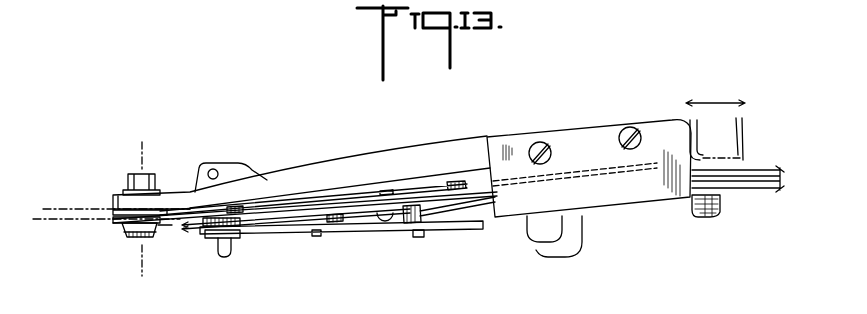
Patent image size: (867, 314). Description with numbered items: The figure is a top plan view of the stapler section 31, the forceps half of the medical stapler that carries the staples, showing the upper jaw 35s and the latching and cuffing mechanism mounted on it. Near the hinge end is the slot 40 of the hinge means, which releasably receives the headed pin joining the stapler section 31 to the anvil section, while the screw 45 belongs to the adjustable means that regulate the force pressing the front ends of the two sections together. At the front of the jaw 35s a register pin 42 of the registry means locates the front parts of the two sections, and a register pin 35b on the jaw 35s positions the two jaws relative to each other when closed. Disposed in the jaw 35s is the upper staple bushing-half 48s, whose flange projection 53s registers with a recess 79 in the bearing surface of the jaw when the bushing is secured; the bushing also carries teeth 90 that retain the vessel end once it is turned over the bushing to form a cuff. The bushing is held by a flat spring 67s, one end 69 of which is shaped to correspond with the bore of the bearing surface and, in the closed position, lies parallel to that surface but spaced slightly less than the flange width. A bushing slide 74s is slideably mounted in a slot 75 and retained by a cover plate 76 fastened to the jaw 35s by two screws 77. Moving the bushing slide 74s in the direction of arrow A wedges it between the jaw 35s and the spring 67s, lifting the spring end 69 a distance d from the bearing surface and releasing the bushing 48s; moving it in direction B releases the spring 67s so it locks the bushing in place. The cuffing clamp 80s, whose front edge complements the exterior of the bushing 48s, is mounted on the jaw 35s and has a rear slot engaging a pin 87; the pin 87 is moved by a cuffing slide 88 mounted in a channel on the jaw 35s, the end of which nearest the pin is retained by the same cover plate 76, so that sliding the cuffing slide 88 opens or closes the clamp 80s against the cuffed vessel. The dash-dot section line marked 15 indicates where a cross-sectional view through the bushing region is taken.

The distance d is at (58, 190).
The section line 15- 15 is at (151, 265).
The projection 53s is at (141, 186).
The upper jaw 35s is at (337, 145).
The register pin 35b is at (178, 199).
The recess 79 is at (128, 203).
The spring end 69 is at (110, 221).
The teeth 90 is at (148, 238).
The upper staple bushing-half 48s is at (162, 232).
The bushing slide 74s is at (462, 181).
The slot 75 is at (290, 206).
The cuffing clamp 80s is at (404, 231).
The flat spring 67s is at (360, 218).
The pin 87 is at (420, 238).
The register pin 42 is at (230, 250).
The cover plate 76 is at (588, 122).
The screws 77 is at (538, 148).
The stapler section 31 is at (668, 114).
The cuffing slide 88 is at (783, 176).
The screw 45 is at (722, 203).
The slot 40 is at (538, 252).